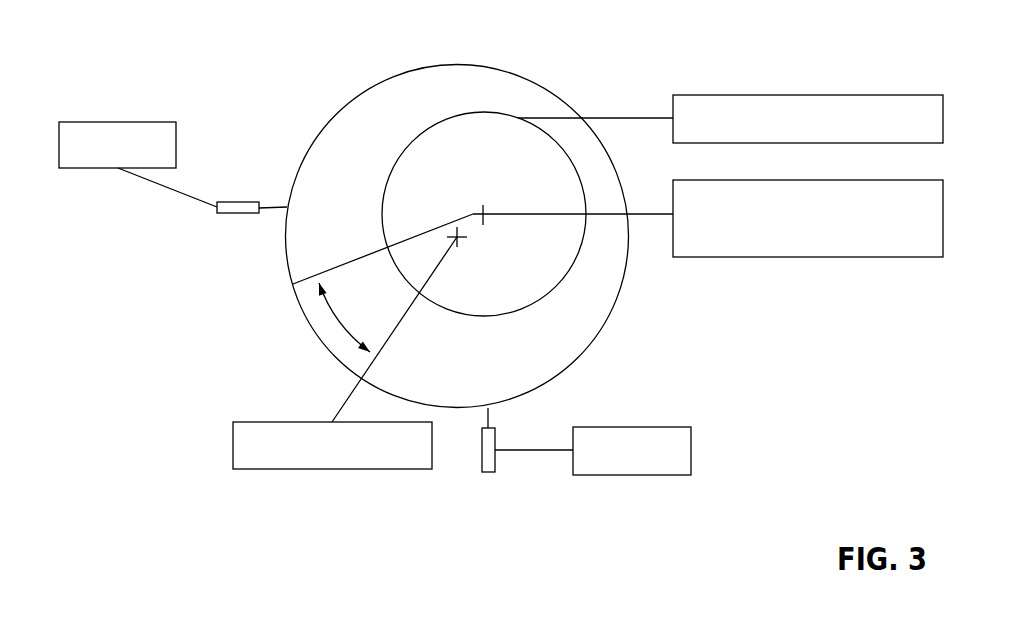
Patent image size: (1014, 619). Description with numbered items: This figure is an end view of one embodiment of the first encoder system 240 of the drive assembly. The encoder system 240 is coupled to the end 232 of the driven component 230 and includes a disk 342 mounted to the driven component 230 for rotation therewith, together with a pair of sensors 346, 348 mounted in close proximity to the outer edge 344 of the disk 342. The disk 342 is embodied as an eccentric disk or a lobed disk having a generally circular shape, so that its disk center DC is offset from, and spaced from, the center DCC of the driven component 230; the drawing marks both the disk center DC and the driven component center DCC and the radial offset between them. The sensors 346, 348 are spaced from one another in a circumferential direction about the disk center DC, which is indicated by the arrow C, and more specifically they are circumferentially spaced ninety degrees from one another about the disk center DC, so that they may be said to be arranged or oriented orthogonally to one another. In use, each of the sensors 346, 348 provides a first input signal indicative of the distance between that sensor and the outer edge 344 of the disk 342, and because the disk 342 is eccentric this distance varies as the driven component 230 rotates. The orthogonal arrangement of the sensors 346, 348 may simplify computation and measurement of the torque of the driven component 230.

The first encoder system 240 is at (607, 40).
The driven component 230 is at (748, 96).
The end of the driven component 232 is at (464, 112).
The outer edge of the disk 344 is at (370, 88).
The disk 342 is at (283, 258).
The sensor 346 is at (118, 122).
The sensor 348 is at (650, 427).
The arrow indicating circumferential direction C is at (337, 320).
The disk center DC is at (330, 469).
The center of the driven component DCC is at (807, 257).